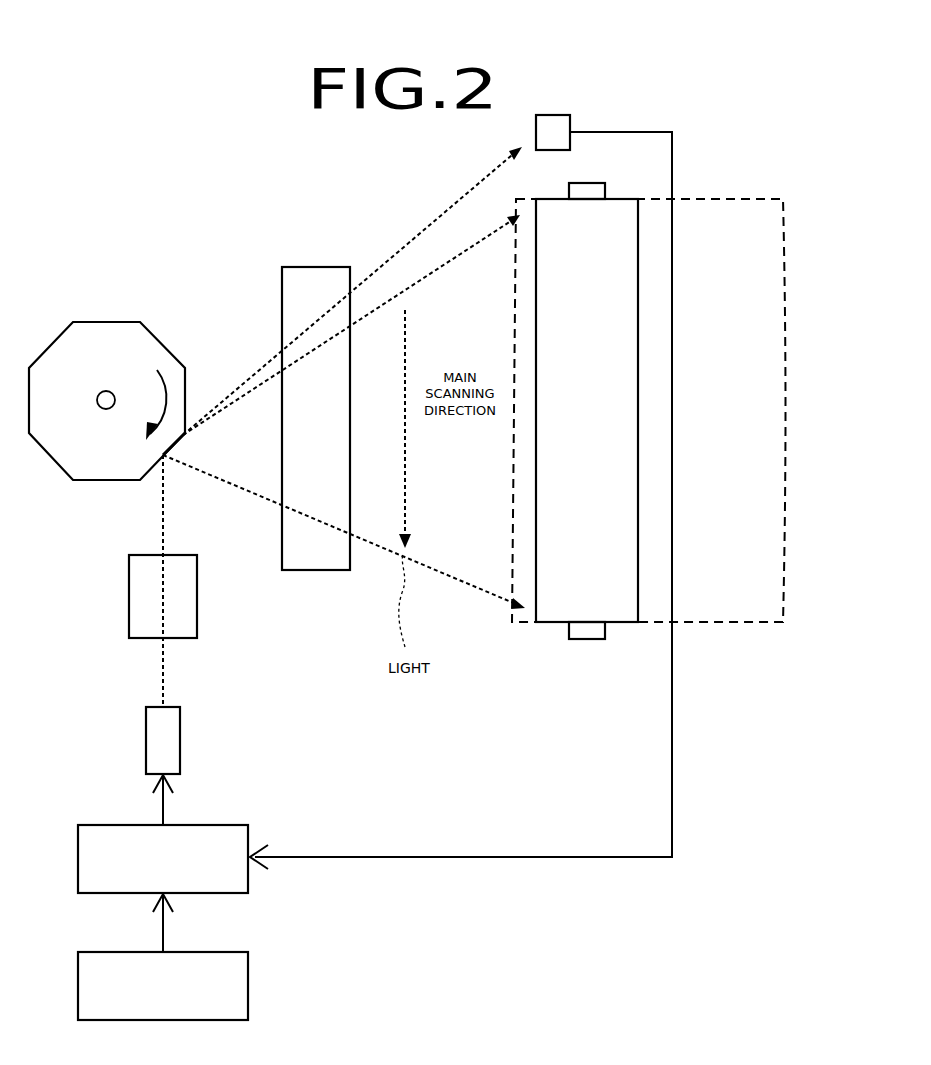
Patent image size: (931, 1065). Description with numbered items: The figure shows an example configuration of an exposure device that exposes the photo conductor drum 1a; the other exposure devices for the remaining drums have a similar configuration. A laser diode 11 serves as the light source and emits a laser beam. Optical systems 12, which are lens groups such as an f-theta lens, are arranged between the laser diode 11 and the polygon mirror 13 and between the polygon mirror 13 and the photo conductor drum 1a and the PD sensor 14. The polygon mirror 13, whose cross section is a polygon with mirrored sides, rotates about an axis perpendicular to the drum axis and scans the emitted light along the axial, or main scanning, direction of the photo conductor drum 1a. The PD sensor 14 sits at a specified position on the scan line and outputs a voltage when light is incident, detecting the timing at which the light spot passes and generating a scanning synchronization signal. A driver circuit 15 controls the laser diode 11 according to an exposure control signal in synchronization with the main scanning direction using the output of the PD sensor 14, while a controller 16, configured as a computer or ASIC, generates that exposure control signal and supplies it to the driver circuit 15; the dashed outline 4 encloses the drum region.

The photo conductor drum 1a is at (617, 198).
The image forming unit 4 is at (780, 197).
The laser diode 11 is at (181, 727).
The optical system 12 is at (313, 267).
The polygon mirror 13 is at (147, 340).
The PD sensor 14 is at (553, 114).
The driver circuit 15 is at (222, 825).
The controller 16 is at (248, 988).